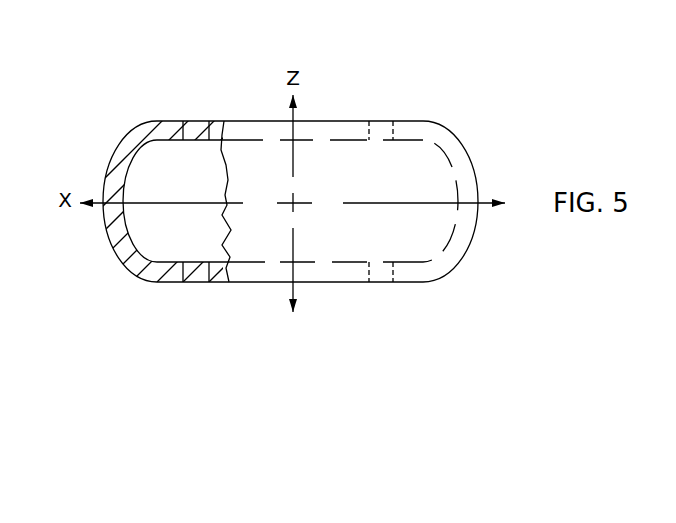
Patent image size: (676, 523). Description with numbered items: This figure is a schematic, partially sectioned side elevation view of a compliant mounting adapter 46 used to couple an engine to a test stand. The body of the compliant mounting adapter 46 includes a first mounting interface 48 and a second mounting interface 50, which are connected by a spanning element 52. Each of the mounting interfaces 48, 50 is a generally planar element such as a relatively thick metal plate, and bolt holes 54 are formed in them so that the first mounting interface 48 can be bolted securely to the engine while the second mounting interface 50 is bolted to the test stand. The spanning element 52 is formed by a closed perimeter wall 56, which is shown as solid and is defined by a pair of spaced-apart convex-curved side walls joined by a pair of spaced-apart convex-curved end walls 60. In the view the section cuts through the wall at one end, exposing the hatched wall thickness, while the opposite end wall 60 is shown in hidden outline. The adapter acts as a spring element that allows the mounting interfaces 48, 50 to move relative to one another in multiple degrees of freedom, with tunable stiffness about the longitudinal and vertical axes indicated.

The compliant mounting adapter 46 is at (462, 92).
The first mounting interface 48 is at (280, 273).
The second mounting interface 50 is at (256, 128).
The spanning element 52 is at (107, 262).
The bolt holes 54 is at (367, 130).
The closed perimeter wall 56 is at (460, 258).
The end walls 60 is at (116, 174).